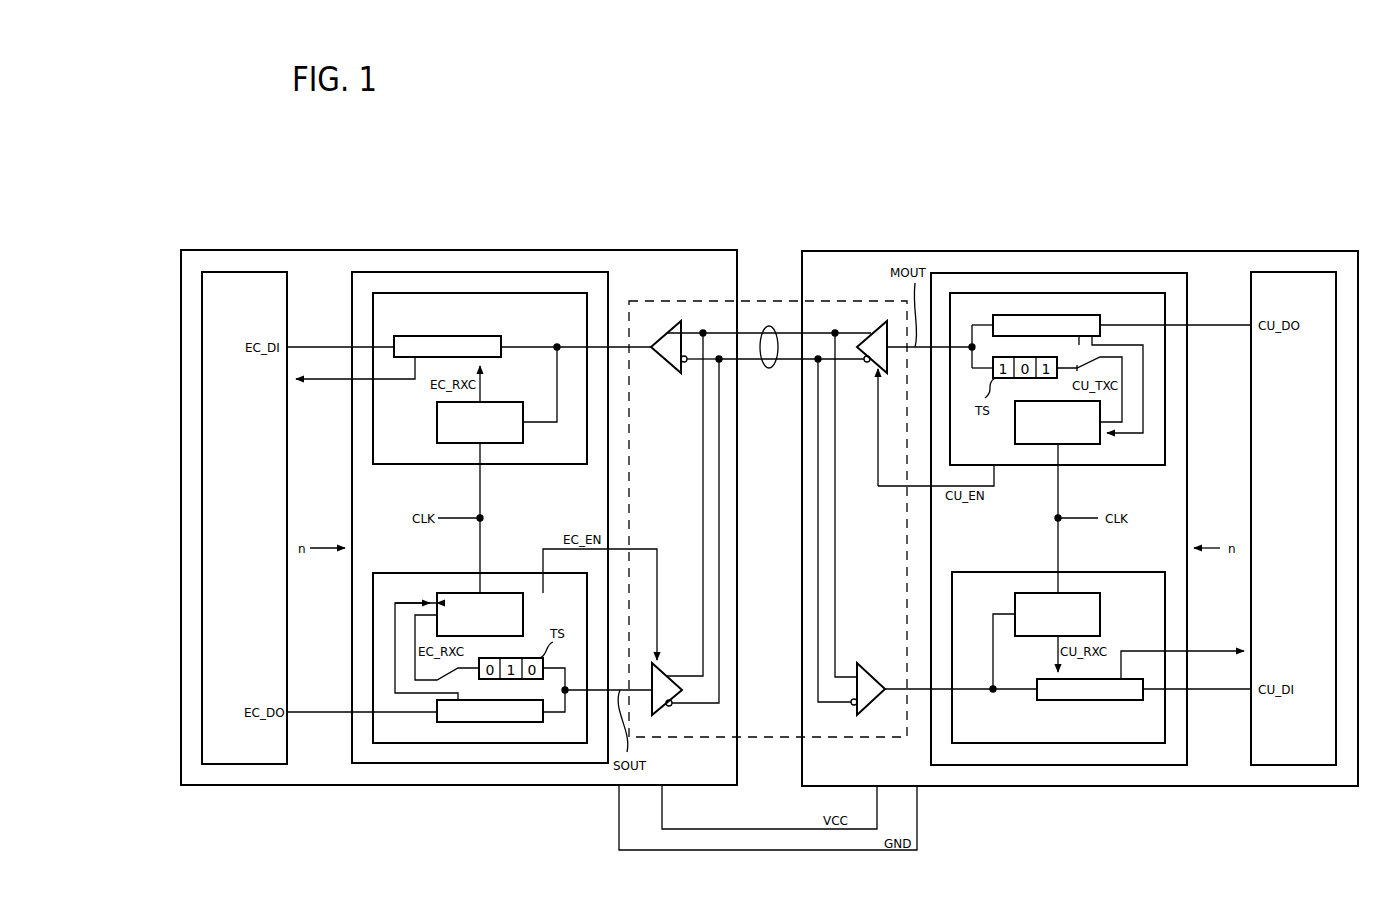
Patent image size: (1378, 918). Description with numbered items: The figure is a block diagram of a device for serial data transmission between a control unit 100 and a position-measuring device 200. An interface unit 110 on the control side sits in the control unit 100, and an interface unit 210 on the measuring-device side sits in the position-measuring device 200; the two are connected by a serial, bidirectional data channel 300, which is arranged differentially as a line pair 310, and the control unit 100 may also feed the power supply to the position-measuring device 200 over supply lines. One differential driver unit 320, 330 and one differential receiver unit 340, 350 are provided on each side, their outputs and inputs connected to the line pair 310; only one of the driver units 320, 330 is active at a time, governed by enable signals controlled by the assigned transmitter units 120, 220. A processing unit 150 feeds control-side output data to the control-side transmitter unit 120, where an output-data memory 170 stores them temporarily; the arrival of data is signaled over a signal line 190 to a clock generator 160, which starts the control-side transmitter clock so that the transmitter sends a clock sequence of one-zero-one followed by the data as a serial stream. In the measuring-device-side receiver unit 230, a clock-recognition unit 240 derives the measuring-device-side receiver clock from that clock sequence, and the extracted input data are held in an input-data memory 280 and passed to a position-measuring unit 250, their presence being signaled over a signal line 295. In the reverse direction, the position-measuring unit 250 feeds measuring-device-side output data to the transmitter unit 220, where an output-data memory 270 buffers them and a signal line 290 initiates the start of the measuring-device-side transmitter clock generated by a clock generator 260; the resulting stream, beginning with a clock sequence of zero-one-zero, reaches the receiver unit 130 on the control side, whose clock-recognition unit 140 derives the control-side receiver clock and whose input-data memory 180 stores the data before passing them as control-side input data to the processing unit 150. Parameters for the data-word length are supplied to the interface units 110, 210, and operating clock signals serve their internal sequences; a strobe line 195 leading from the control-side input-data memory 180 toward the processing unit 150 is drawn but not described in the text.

The control unit 100 is at (1218, 258).
The interface unit on the control side 110 is at (1150, 765).
The control-side transmitter unit 120 is at (1112, 292).
The receiver unit on the control side 130 is at (1060, 743).
The control-side clock-recognition unit 140 is at (1100, 604).
The processing unit 150 is at (1298, 278).
The clock generator 160 is at (1020, 428).
The output-data memory 170 is at (1010, 320).
The input-data memory on the control side 180 is at (1108, 695).
The signal line 190 is at (1143, 395).
The receive data strobe line 195 is at (1210, 648).
The position-measuring device 200 is at (365, 262).
The interface unit on the measuring-device side 210 is at (487, 762).
The transmitter unit on the measuring-device side 220 is at (413, 741).
The measuring-device-side receiver unit 230 is at (493, 305).
The clock-recognition unit 240 is at (458, 422).
The position-measuring unit 250 is at (239, 292).
The clock generator 260 is at (505, 605).
The output-data memory 270 is at (527, 722).
The input-data memory 280 is at (438, 345).
The signal line 290 is at (395, 652).
The signal line 295 is at (322, 383).
The data channel 300 is at (640, 303).
The line pair 310 is at (770, 350).
The differential driver unit 320 is at (870, 322).
The differential driver unit 330 is at (658, 712).
The differential receiver unit 340 is at (875, 700).
The differential receiver unit 350 is at (661, 372).